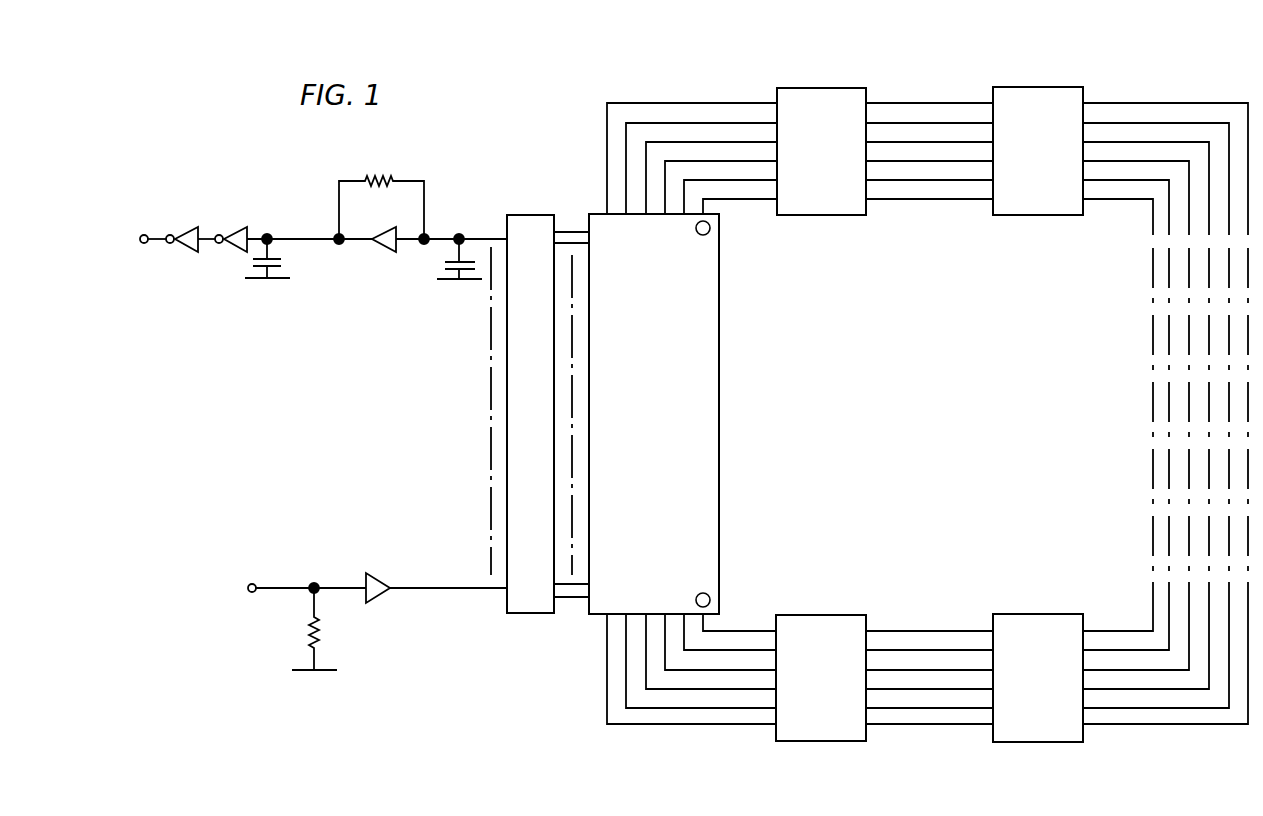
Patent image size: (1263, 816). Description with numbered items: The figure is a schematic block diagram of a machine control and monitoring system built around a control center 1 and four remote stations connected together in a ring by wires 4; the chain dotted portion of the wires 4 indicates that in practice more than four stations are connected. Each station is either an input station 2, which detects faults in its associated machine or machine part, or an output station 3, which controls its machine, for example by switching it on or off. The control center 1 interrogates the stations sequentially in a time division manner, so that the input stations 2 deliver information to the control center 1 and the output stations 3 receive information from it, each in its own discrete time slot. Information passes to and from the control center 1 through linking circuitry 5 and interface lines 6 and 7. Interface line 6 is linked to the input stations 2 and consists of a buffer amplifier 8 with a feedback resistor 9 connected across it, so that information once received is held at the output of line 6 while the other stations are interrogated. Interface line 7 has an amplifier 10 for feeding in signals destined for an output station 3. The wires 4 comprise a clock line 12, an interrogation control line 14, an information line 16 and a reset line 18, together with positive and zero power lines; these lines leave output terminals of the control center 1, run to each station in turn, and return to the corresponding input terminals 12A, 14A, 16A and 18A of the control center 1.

The control center 1 is at (663, 394).
The input station 2 is at (823, 152).
The output station 3 is at (1043, 152).
The wires 4 is at (670, 97).
The linking circuitry 5 is at (535, 394).
The interface line 6 is at (317, 253).
The interface line 7 is at (297, 624).
The buffer amplifier 8 is at (383, 252).
The feedback resistor 9 is at (404, 169).
The amplifier 10 is at (377, 600).
The clock line 12 is at (684, 172).
The interrogation control line 14 is at (622, 224).
The information line 16 is at (704, 191).
The reset line 18 is at (663, 224).
The input terminal 12A is at (684, 659).
The input terminal 14A is at (627, 606).
The input terminal 16A is at (703, 642).
The input terminal 18A is at (667, 606).